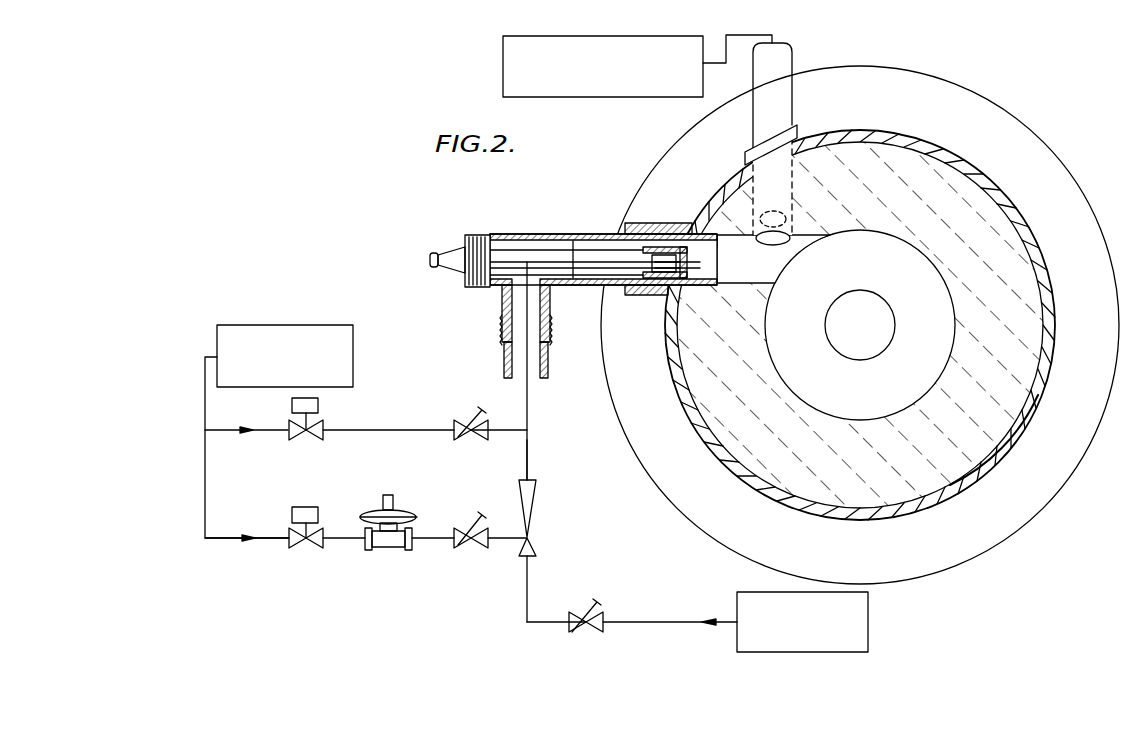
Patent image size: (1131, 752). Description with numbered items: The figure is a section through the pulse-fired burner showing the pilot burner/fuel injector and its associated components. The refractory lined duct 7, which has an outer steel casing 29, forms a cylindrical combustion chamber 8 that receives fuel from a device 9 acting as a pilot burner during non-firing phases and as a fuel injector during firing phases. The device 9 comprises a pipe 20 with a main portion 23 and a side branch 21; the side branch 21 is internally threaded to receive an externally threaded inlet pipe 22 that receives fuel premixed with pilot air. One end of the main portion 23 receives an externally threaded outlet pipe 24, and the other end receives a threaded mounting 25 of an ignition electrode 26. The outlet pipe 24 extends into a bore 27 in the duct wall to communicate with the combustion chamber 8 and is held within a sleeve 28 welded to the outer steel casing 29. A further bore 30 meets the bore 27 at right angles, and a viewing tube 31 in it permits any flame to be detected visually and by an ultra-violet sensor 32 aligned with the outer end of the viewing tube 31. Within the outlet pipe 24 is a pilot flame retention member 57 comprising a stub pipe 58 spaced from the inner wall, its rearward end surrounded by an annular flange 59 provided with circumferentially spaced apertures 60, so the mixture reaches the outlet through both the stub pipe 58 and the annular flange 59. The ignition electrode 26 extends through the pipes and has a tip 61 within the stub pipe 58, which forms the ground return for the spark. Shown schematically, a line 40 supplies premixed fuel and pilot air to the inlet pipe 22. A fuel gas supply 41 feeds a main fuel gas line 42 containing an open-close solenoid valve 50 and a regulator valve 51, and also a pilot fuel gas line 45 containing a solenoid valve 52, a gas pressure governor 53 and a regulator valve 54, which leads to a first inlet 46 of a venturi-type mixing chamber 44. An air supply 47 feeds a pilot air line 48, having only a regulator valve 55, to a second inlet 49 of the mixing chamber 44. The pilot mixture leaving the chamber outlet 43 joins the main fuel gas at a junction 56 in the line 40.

The duct 7 is at (937, 482).
The combustion chamber 8 is at (873, 393).
The device 9 is at (551, 233).
The pipe 20 is at (612, 232).
The side branch 21 is at (552, 333).
The inlet pipe 22 is at (548, 365).
The main portion 23 is at (521, 232).
The outlet pipe 24 is at (637, 223).
The threaded mounting 25 is at (465, 276).
The ignition electrode 26 is at (505, 248).
The bore 27 is at (785, 257).
The sleeve 28 is at (673, 223).
The outer steel casing 29 is at (700, 426).
The further bore 30 is at (789, 168).
The viewing tube 31 is at (787, 67).
The ultra-violet sensor 32 is at (503, 57).
The line 40 is at (528, 413).
The fuel gas supply 41 is at (297, 328).
The main fuel gas line 42 is at (408, 408).
The outlet 43 is at (528, 460).
The mixing chamber 44 is at (528, 493).
The pilot fuel gas line 45 is at (282, 540).
The first inlet 46 is at (510, 540).
The air supply 47 is at (738, 635).
The pilot air line 48 is at (627, 623).
The second inlet 49 is at (528, 575).
The solenoid valve 50 is at (318, 405).
The regulator valve 51 is at (458, 420).
The solenoid valve 52 is at (305, 513).
The gas pressure governor 53 is at (403, 513).
The regulator valve 54 is at (458, 550).
The regulator valve 55 is at (572, 633).
The junction 56 is at (528, 430).
The pilot flame retention member 57 is at (667, 283).
The stub pipe 58 is at (708, 280).
The annular flange 59 is at (633, 275).
The apertures 60 is at (687, 243).
The tip 61 is at (687, 265).